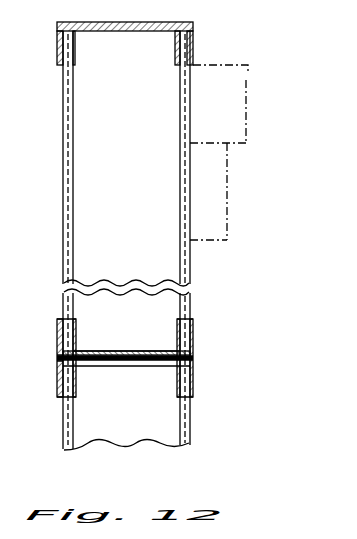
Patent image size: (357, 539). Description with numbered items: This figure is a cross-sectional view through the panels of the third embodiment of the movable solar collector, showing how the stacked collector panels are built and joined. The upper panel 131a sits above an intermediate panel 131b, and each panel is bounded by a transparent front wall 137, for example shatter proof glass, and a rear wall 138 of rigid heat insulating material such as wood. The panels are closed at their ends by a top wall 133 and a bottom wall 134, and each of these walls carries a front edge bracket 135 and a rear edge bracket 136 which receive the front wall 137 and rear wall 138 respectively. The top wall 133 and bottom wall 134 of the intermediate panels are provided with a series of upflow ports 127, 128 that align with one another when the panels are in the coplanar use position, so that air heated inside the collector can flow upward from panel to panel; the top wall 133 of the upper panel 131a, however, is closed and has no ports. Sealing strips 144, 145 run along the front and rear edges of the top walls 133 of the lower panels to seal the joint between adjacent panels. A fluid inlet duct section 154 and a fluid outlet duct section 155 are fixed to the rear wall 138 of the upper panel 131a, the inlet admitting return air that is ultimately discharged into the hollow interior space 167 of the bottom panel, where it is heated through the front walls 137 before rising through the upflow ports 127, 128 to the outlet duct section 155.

The upflow port 127 is at (135, 367).
The upflow port 128 is at (147, 330).
The upper panel 131a is at (191, 278).
The intermediate panel 131b is at (194, 437).
The top wall 133 is at (193, 365).
The bottom wall 134 is at (192, 353).
The front edge bracket 135 is at (60, 398).
The rear edge bracket 136 is at (194, 397).
The front wall 137 is at (63, 258).
The rear wall 138 is at (191, 260).
The sealing strip 144 is at (58, 359).
The sealing strip 145 is at (193, 358).
The fluid inlet duct section 154 is at (228, 191).
The fluid outlet duct section 155 is at (250, 97).
The hollow interior space 167 is at (90, 445).